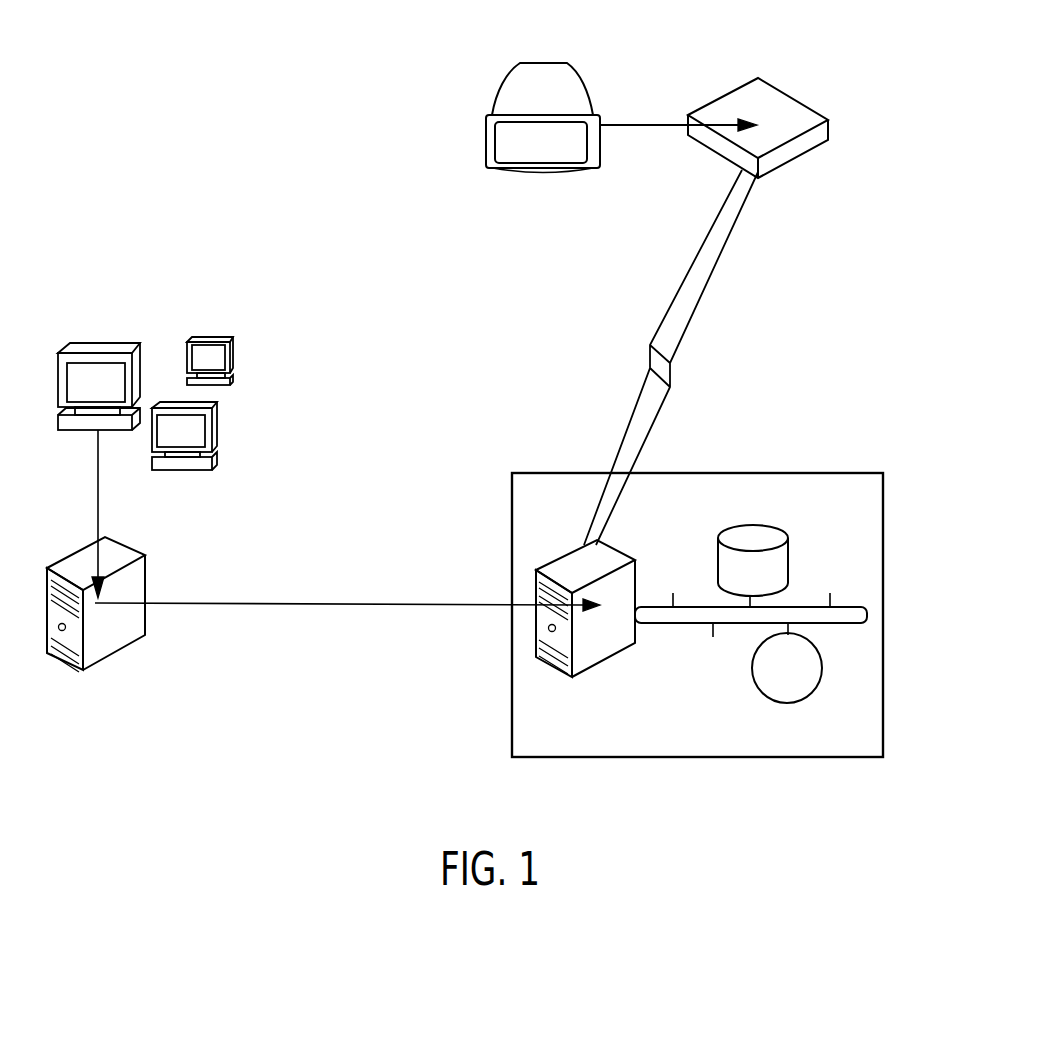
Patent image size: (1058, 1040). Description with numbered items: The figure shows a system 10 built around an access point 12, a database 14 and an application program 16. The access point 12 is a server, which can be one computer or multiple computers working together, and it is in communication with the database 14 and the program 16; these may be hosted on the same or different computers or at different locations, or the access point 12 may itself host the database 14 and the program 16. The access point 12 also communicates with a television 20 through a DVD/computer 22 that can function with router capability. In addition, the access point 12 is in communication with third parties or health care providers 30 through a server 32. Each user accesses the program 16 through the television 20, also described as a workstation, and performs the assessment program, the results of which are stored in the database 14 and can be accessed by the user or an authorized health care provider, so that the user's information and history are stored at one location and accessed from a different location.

The system 10 is at (643, 764).
The access point 12 is at (595, 650).
The database 14 is at (760, 540).
The application program 16 is at (802, 678).
The television 20 is at (507, 145).
The DVD/computer 22 is at (768, 100).
The health care providers 30 is at (260, 318).
The server 32 is at (102, 647).